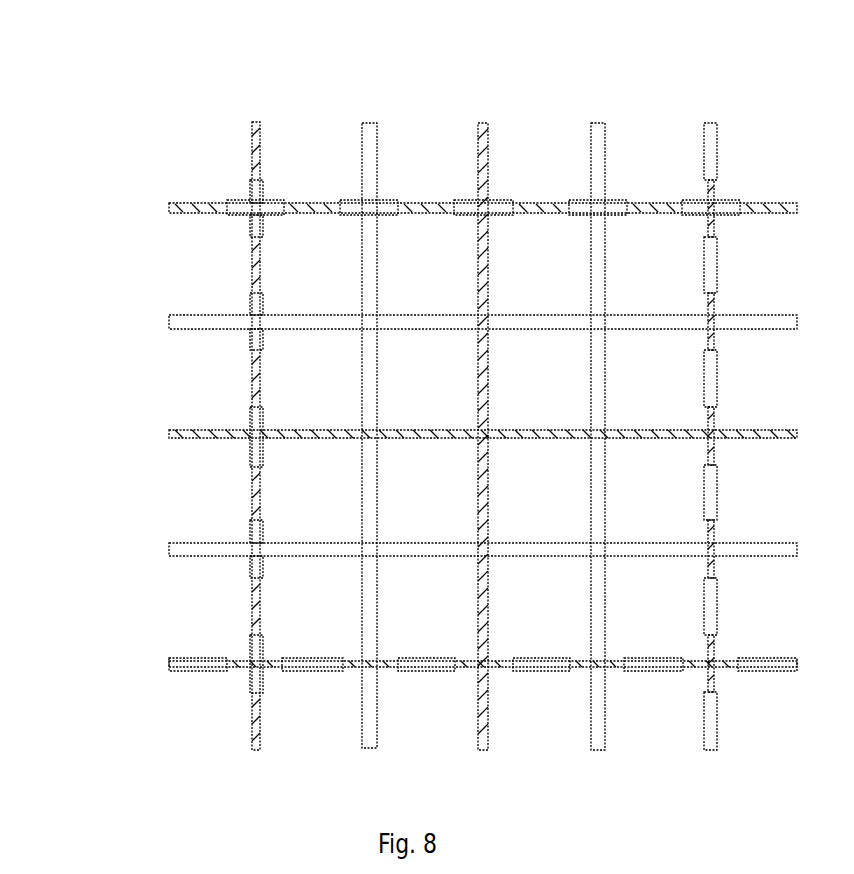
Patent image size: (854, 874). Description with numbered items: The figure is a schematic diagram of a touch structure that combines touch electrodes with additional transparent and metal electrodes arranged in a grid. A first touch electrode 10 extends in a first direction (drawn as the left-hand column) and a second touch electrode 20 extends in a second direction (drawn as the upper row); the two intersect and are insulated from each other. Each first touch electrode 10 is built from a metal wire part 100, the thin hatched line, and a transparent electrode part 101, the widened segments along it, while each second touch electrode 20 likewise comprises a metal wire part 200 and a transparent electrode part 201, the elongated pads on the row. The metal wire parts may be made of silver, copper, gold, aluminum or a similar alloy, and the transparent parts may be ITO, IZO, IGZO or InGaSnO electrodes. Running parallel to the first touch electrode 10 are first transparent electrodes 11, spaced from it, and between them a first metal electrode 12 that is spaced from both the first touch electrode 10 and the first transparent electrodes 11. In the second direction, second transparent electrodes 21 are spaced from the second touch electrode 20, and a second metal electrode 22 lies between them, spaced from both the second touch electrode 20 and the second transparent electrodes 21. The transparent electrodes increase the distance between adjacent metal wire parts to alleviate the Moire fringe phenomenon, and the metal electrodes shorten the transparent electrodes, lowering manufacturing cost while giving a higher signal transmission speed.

The first touch electrode 10 is at (148, 415).
The metal wire part 100 is at (253, 158).
The transparent electrode part 101 is at (251, 200).
The first transparent electrode 11 is at (370, 155).
The first metal electrode 12 is at (482, 138).
The second touch electrode 20 is at (403, 259).
The metal wire part 200 is at (195, 208).
The transparent electrode part 201 is at (250, 209).
The second transparent electrode 21 is at (173, 328).
The second metal electrode 22 is at (173, 437).